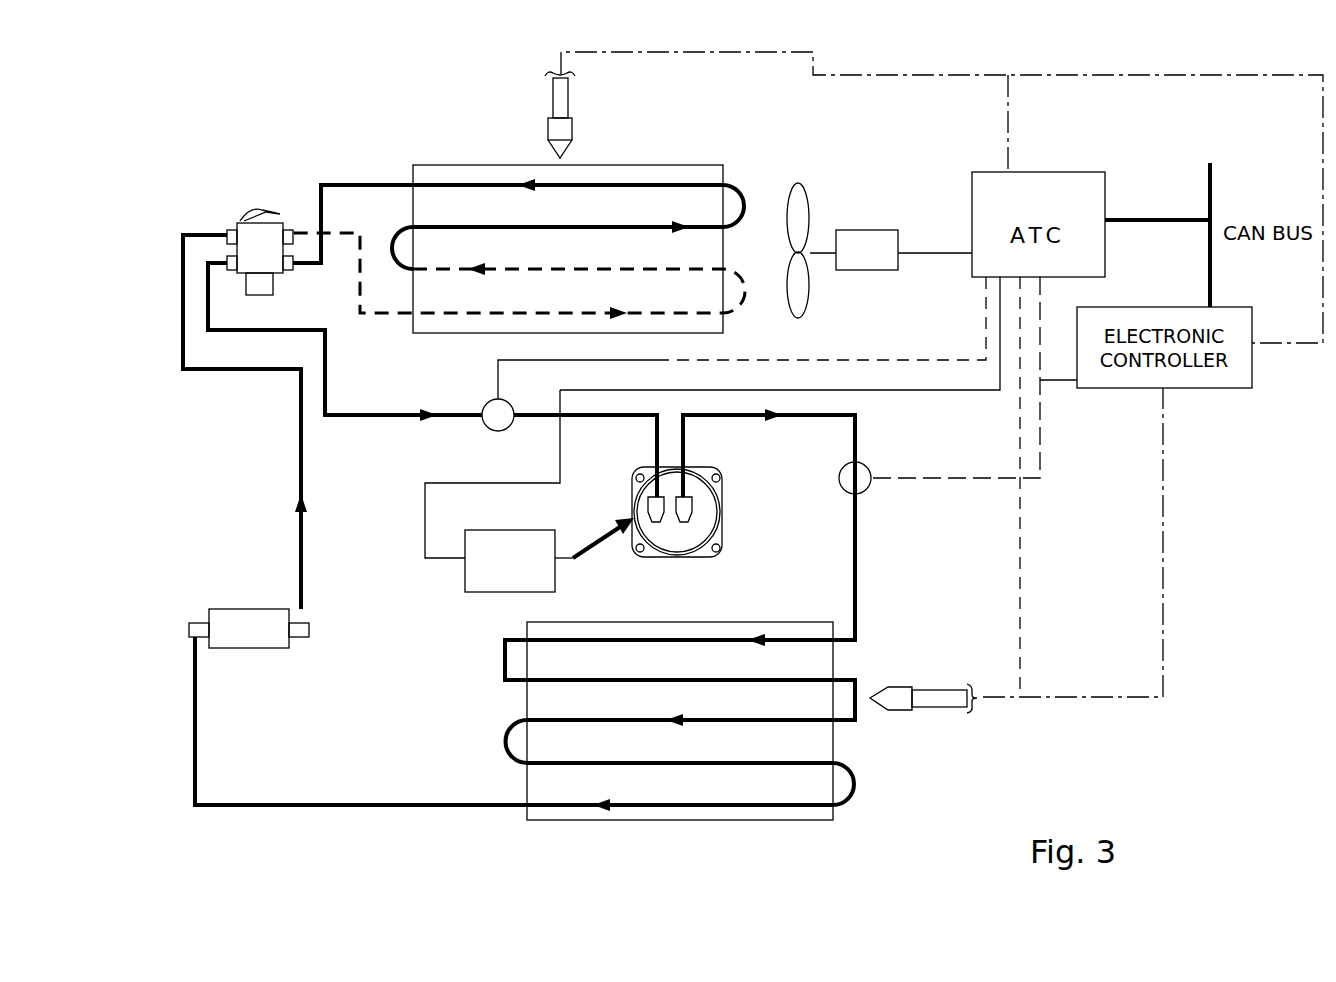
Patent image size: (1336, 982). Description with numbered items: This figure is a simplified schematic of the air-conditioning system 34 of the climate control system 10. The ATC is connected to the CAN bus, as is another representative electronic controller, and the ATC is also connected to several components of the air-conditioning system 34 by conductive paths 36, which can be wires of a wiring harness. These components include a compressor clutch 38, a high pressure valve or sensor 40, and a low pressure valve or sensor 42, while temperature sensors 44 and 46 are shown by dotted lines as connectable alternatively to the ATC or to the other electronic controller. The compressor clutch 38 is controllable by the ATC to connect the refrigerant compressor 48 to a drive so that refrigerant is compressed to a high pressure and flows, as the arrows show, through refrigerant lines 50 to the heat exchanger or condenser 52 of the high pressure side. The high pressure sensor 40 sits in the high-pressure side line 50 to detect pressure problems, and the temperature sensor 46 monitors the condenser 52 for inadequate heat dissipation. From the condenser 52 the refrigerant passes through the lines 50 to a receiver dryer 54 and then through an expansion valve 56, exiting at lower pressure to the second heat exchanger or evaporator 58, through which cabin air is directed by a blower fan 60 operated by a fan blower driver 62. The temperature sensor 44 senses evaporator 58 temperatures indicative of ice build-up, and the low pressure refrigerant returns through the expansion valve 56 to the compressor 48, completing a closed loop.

The climate control system 10 is at (1165, 751).
The air-conditioning system 34 is at (1219, 778).
The conductive paths 36 is at (1115, 75).
The compressor clutch 38 is at (555, 578).
The high pressure valve or sensor 40 is at (839, 478).
The low pressure valve or sensor 42 is at (487, 427).
The temperature sensor 44 is at (572, 138).
The temperature sensor 46 is at (905, 712).
The refrigerant compressor 48 is at (722, 512).
The refrigerant lines 50 is at (858, 543).
The heat exchanger or condenser 52 is at (833, 815).
The receiver dryer 54 is at (254, 650).
The expansion valve 56 is at (268, 212).
The heat exchanger or evaporator 58 is at (723, 168).
The blower fan 60 is at (805, 305).
The fan blower driver 62 is at (858, 230).